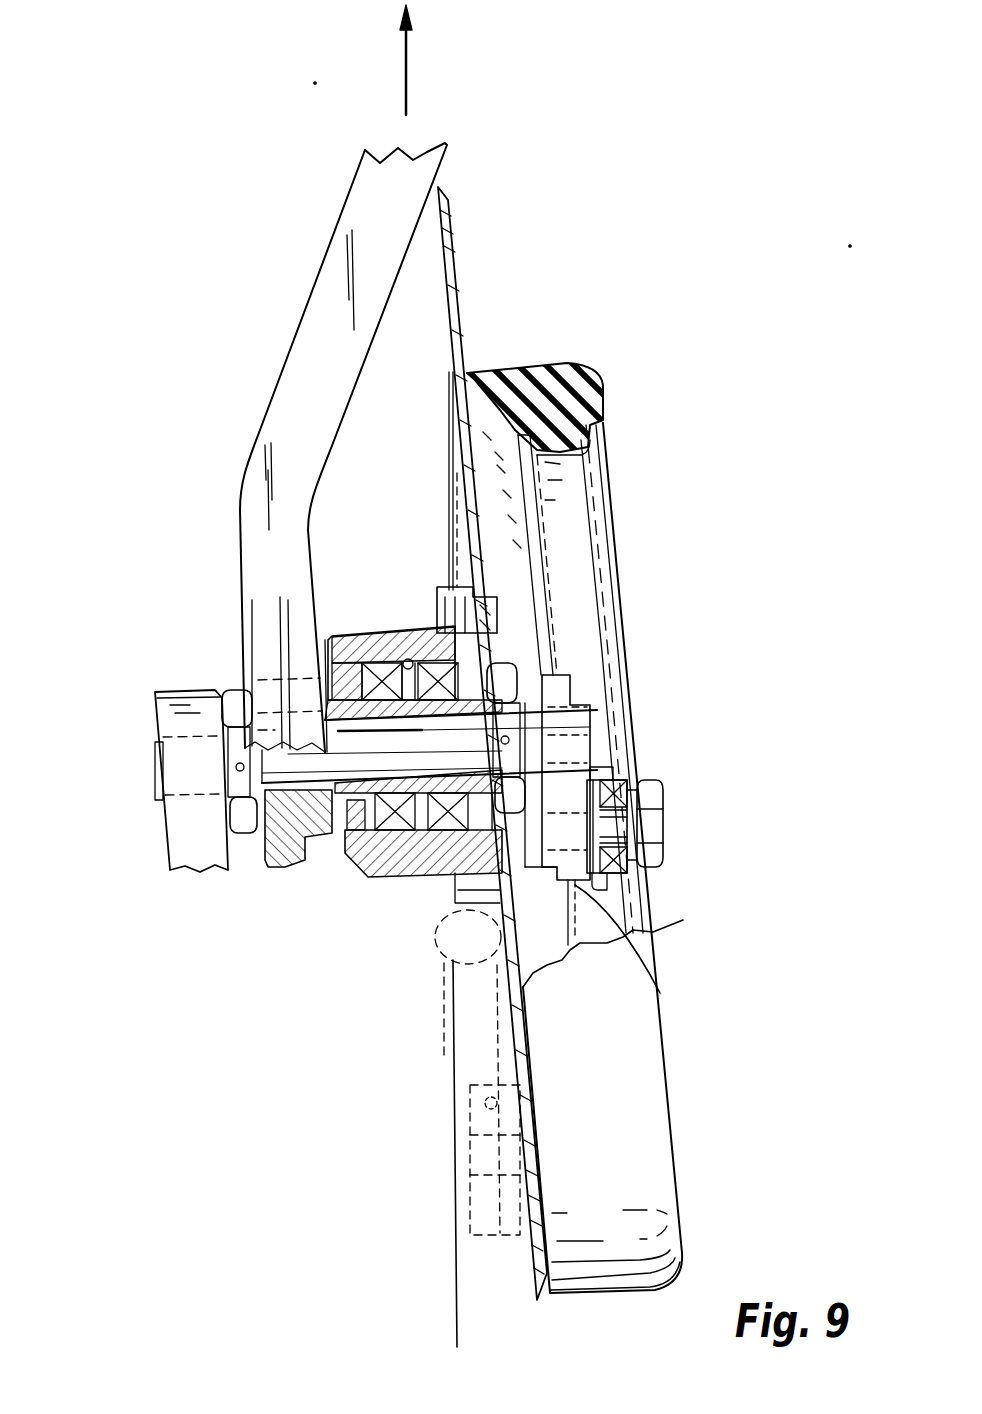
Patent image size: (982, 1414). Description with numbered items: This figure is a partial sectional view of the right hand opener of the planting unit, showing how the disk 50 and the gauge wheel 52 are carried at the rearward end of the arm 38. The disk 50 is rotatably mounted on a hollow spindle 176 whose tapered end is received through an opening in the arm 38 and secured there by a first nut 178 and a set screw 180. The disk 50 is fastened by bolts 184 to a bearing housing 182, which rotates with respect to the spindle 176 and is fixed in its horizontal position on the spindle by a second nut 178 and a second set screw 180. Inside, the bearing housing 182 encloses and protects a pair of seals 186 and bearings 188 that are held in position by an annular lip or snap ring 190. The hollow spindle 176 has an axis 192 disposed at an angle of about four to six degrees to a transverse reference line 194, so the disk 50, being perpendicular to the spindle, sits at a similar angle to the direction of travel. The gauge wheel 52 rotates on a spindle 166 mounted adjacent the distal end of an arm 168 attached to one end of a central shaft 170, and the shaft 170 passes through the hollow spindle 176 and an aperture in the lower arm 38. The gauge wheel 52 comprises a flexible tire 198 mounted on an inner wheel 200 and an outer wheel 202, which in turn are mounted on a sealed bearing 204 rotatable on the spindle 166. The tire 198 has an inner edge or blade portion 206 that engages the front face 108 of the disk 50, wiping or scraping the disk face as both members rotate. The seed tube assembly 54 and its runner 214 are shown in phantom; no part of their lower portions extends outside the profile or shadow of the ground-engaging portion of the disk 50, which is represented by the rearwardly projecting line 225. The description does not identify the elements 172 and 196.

The arm 38 is at (315, 447).
The front face of disk 108 is at (508, 734).
The disk 50 is at (421, 467).
The gauge wheel 52 is at (639, 800).
The flexible tire 198 is at (548, 381).
The inner edge or blade portion 206 is at (536, 415).
The outer wheel 202 is at (663, 665).
The inner wheel 200 is at (628, 555).
The bolts 184 is at (642, 722).
The runner or shoe 214 is at (450, 845).
The bearing housing 182 is at (413, 613).
The bearings 188 is at (415, 695).
The transverse reference line 194 is at (544, 746).
The roller 172 is at (133, 770).
The central shaft 170 is at (101, 771).
The nut 178 is at (425, 703).
The set screw 180 is at (430, 757).
The seals 186 is at (419, 578).
The axis 192 is at (654, 810).
The spindle 166 is at (690, 820).
The hex nut 196 is at (732, 823).
The sealed bearing 204 is at (702, 902).
The hollow spindle 176 is at (285, 861).
The annular lip or snap ring 190 is at (408, 861).
The arm 168 is at (663, 950).
The seed tube assembly 54 is at (440, 1160).
The rearwardly projecting line 225 is at (397, 1153).